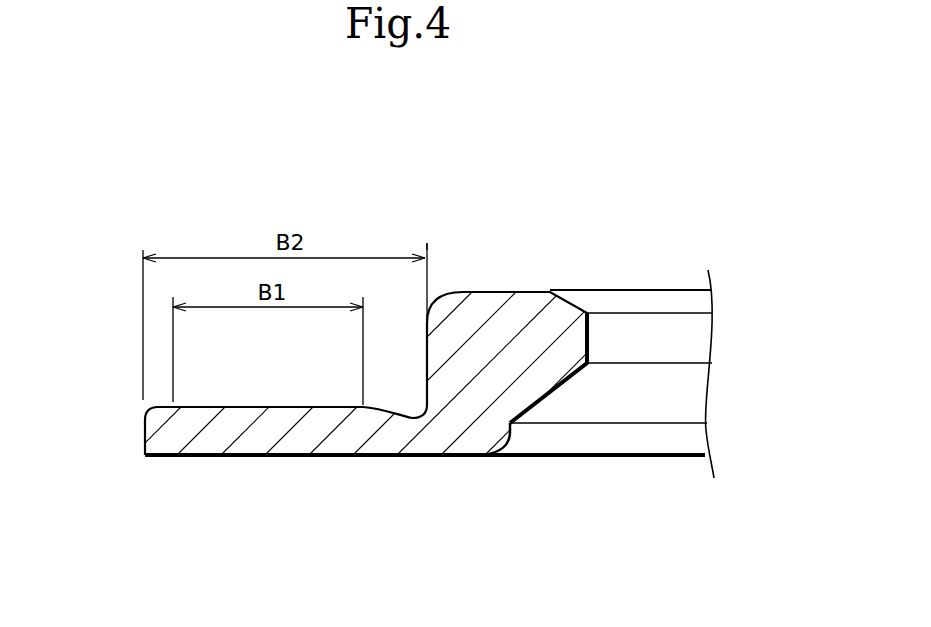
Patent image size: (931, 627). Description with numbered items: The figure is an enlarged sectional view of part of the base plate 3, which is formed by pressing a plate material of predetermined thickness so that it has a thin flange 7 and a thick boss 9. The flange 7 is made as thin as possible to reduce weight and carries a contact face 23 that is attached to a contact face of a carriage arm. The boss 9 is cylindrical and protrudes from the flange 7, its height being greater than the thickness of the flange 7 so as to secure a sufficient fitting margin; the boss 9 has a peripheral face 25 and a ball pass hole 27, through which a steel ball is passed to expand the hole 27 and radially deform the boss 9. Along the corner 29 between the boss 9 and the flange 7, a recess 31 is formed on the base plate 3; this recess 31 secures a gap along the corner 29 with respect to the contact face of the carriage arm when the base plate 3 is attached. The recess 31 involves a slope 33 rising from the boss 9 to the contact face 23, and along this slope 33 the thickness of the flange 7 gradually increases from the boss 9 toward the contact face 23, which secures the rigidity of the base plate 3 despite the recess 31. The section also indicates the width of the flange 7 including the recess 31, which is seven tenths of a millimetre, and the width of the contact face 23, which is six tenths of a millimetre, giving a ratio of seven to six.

The base plate 3 is at (520, 288).
The flange 7 is at (148, 447).
The boss 9 is at (477, 305).
The contact face 23 is at (203, 407).
The peripheral face 25 is at (427, 345).
The ball pass hole 27 is at (590, 334).
The corner 29 is at (412, 422).
The recess 31 is at (397, 428).
The slope 33 is at (381, 425).